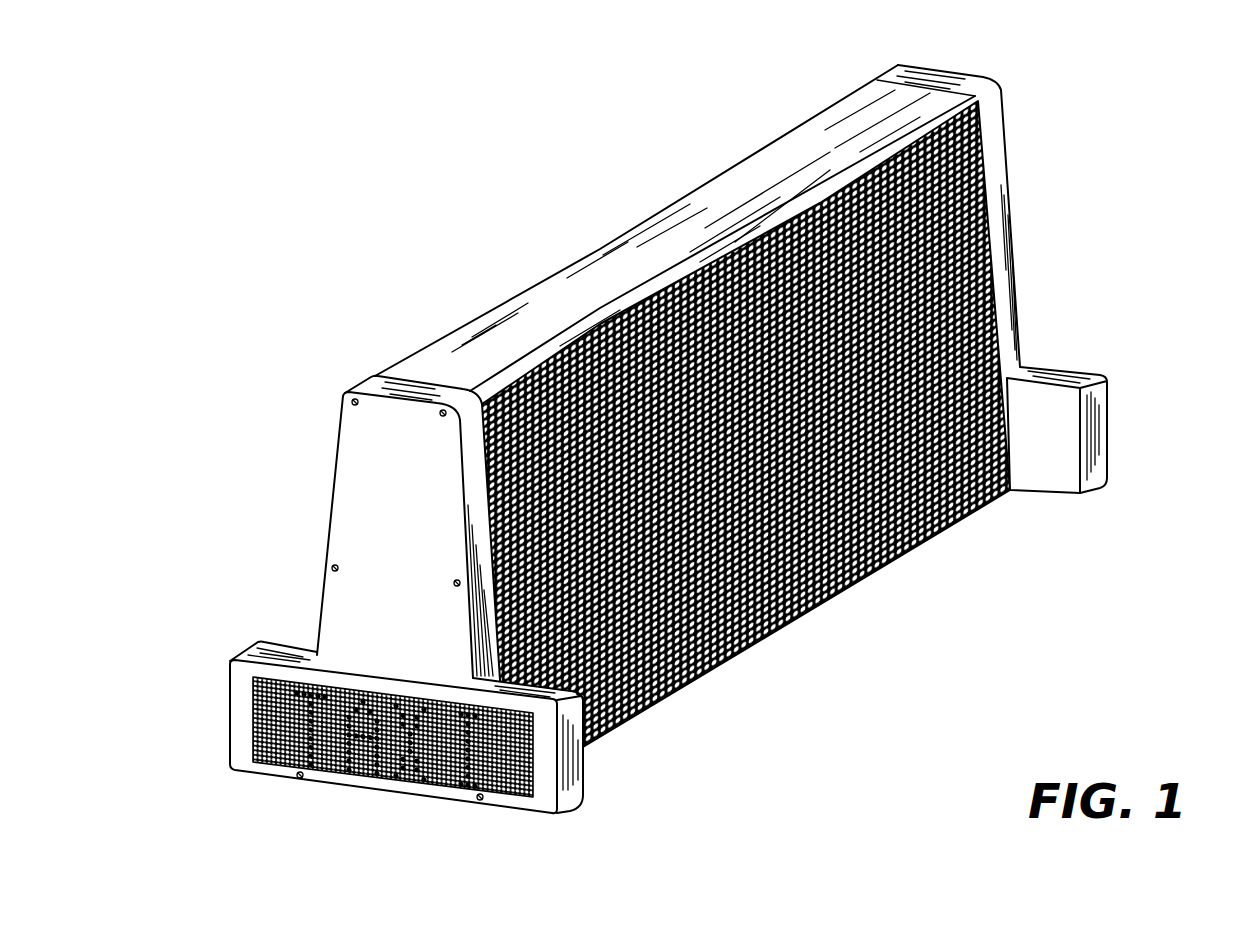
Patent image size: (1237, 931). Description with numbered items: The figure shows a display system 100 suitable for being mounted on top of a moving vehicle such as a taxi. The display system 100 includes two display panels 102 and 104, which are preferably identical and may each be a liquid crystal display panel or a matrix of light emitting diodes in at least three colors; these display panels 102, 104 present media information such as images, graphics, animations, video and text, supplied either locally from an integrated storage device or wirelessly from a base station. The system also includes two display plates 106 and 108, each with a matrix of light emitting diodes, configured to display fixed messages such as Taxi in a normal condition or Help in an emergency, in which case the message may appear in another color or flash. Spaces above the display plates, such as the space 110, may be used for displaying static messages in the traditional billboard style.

The display system 100 is at (684, 465).
The display panel 102 is at (997, 308).
The display panel 104 is at (510, 298).
The display plate 106 is at (517, 777).
The display plate 108 is at (1010, 188).
The space above the display plates 110 is at (348, 487).